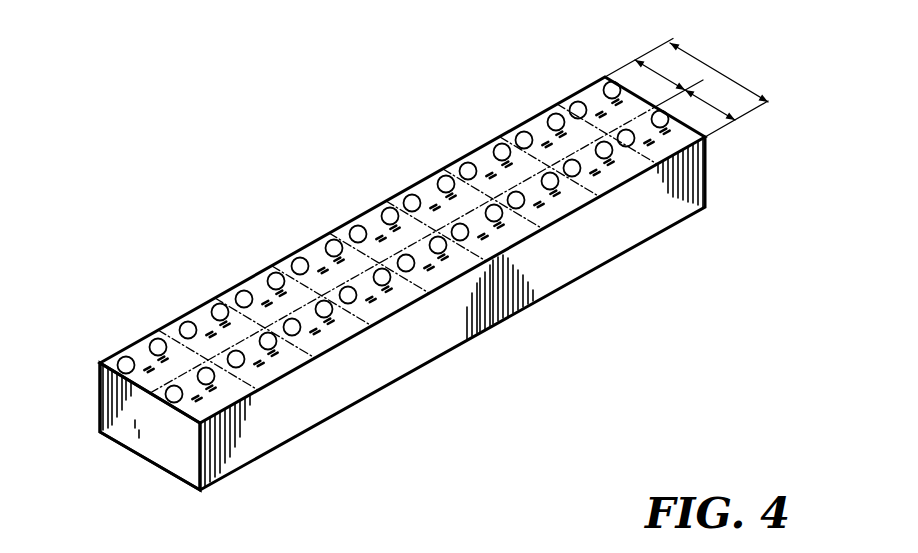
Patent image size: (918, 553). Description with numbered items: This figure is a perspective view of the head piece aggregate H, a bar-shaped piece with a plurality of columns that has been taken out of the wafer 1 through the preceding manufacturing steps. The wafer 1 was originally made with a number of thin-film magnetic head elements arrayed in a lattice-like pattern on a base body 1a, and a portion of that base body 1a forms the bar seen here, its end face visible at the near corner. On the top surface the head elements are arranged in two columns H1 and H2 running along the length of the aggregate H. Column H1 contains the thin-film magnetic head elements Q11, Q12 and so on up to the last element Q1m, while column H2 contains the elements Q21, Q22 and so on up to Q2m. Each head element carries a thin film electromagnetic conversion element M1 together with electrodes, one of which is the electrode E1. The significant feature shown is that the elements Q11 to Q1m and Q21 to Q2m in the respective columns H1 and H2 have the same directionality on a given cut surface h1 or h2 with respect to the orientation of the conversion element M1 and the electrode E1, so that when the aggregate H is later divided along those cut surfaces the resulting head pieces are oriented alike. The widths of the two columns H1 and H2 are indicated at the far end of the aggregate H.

The wafer 1 is at (541, 310).
The base body 1a is at (143, 443).
The thin-film magnetic head element Q11 is at (217, 400).
The thin-film magnetic head element Q12 is at (303, 362).
The thin-film magnetic head element Q1m is at (704, 170).
The thin-film magnetic head element Q21 is at (139, 351).
The thin-film magnetic head element Q22 is at (197, 312).
The thin-film magnetic head element Q2m is at (595, 102).
The thin film electromagnetic conversion element M1 is at (352, 228).
The electrode E1 is at (377, 237).
The cut surface h1 is at (437, 330).
The cut surface h2 is at (266, 272).
The head piece aggregate H is at (706, 64).
The column H1 is at (710, 107).
The column H2 is at (661, 75).